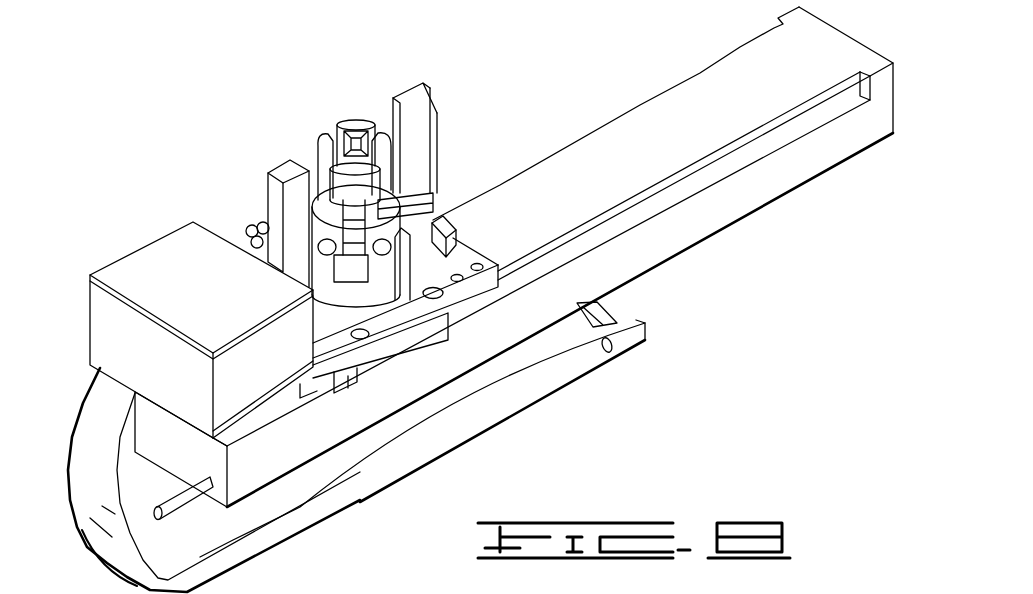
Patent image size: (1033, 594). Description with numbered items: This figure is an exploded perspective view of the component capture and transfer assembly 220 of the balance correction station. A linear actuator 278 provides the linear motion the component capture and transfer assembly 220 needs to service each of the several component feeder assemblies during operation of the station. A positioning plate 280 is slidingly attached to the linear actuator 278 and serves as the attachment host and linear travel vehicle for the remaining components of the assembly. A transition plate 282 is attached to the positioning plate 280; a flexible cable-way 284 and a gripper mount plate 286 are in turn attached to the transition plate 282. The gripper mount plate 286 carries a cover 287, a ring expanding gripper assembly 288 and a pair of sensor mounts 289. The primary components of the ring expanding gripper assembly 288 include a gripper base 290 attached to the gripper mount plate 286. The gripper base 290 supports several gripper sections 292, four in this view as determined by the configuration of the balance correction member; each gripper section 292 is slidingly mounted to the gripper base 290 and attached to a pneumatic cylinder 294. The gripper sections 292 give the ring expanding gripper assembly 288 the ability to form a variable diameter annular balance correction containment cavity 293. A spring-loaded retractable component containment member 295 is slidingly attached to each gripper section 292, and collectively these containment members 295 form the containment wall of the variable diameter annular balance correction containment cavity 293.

The component capture and transfer assembly 220 is at (240, 78).
The linear actuator 278 is at (843, 143).
The positioning plate 280 is at (410, 350).
The transition plate 282 is at (358, 360).
The flexible cable-way 284 is at (489, 408).
The gripper mount plate 286 is at (338, 342).
The cover 287 is at (147, 265).
The ring expanding gripper assembly 288 is at (382, 100).
The sensor mounts 289 is at (413, 127).
The gripper base 290 is at (433, 228).
The gripper sections 292 is at (413, 207).
The variable diameter annular balance correction containment cavity 293 is at (355, 122).
The pneumatic cylinder 294 is at (247, 238).
The spring-loaded retractable component containment member 295 is at (347, 195).